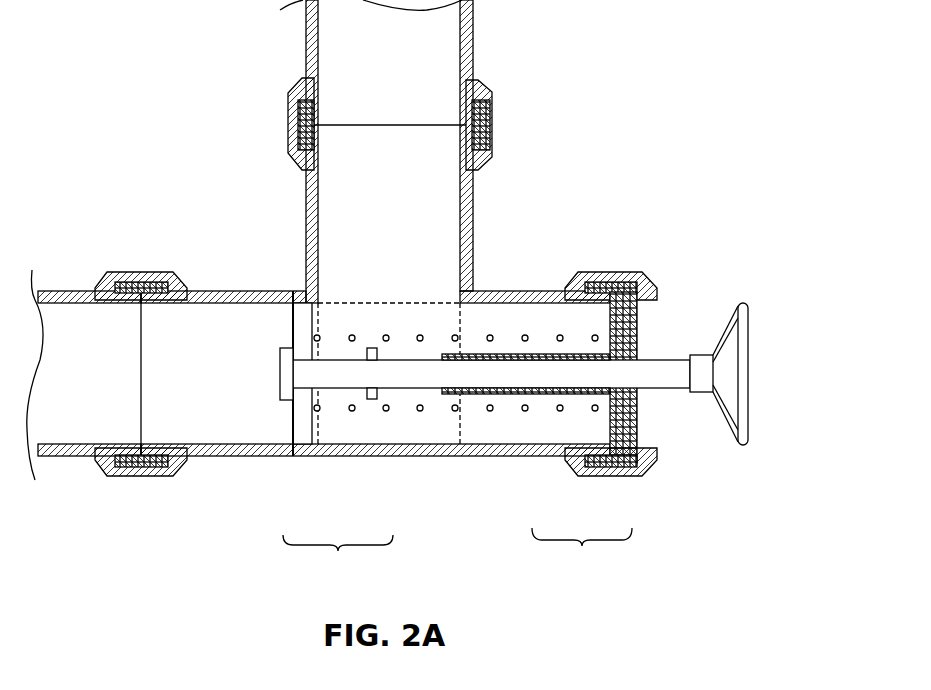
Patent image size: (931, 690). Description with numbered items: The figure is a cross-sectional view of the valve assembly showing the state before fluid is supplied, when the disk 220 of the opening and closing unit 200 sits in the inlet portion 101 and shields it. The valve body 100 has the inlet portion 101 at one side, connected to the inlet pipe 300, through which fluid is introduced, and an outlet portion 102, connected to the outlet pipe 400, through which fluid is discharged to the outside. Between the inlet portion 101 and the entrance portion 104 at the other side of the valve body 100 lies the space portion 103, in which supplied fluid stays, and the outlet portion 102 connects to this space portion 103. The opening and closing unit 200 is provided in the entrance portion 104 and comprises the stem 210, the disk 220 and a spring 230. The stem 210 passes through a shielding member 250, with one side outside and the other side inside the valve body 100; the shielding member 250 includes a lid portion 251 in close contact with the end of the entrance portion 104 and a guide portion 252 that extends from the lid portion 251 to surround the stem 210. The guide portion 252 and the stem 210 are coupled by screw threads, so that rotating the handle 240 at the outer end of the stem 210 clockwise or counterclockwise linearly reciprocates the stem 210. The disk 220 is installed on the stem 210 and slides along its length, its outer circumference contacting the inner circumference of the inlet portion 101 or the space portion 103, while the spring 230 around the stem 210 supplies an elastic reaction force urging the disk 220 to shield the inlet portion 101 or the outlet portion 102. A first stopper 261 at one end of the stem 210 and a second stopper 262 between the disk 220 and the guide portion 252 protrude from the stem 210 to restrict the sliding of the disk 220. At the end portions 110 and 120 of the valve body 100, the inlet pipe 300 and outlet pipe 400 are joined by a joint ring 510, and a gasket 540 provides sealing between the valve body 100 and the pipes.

The valve body 100 is at (430, 457).
The inlet portion 101 is at (171, 366).
The outlet portion 102 is at (393, 160).
The space portion 103 is at (460, 424).
The entrance portion 104 is at (511, 427).
The end portion 110 is at (140, 478).
The end portion 120 is at (492, 133).
The opening and closing unit 200 is at (338, 555).
The stem 210 is at (348, 380).
The disk 220 is at (298, 447).
The spring 230 is at (386, 412).
The handle 240 is at (738, 304).
The shielding member 250 is at (582, 549).
The lid portion 251 is at (625, 460).
The guide portion 252 is at (548, 395).
The first stopper 261 is at (282, 392).
The second stopper 262 is at (372, 347).
The inlet pipe 300 is at (65, 290).
The outlet pipe 400 is at (473, 42).
The joint ring 510 is at (122, 273).
The gasket 540 is at (155, 283).